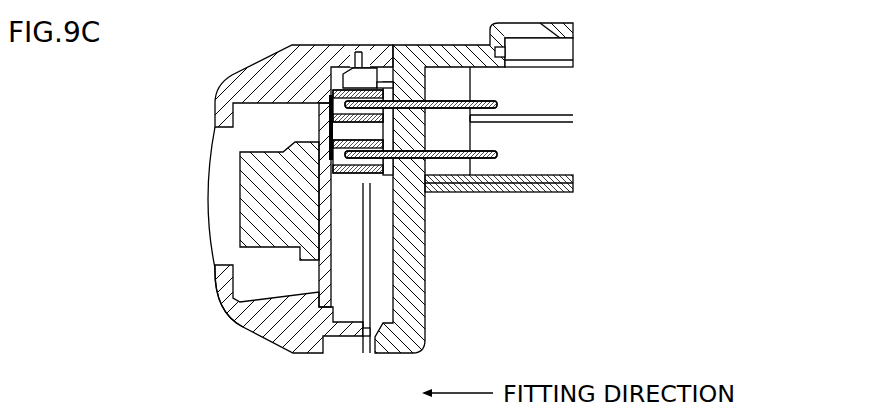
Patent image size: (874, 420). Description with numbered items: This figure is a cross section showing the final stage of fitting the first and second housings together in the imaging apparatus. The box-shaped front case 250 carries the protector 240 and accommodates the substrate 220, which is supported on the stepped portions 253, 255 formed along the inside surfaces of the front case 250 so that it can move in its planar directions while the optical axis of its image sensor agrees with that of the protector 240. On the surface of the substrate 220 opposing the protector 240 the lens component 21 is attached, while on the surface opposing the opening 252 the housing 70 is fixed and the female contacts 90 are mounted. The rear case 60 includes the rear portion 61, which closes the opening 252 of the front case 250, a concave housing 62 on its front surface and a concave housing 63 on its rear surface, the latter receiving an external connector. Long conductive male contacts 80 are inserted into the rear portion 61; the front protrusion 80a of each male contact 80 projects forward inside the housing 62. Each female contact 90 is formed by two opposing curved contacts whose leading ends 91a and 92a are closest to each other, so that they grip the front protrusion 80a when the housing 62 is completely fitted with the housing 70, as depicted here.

The lens component 21 is at (268, 248).
The rear case 60 is at (592, 88).
The rear portion 61 is at (415, 263).
The concave housing (second housing) 62 is at (353, 65).
The concave housing 63 is at (527, 188).
The housing (first housing) 70 is at (343, 83).
The male contact (second contact) 80 is at (393, 95).
The front protrusion 80a is at (468, 126).
The female contact 90 is at (368, 172).
The leading end 91a is at (330, 150).
The leading end 92a is at (372, 133).
The substrate (first substrate) 220 is at (243, 317).
The protector 240 is at (207, 200).
The front case (first case) 250 is at (260, 203).
The opening 252 is at (363, 312).
The stepped portion (supporting portion) 253 is at (317, 80).
The stepped portion (supporting portion) 255 is at (300, 332).